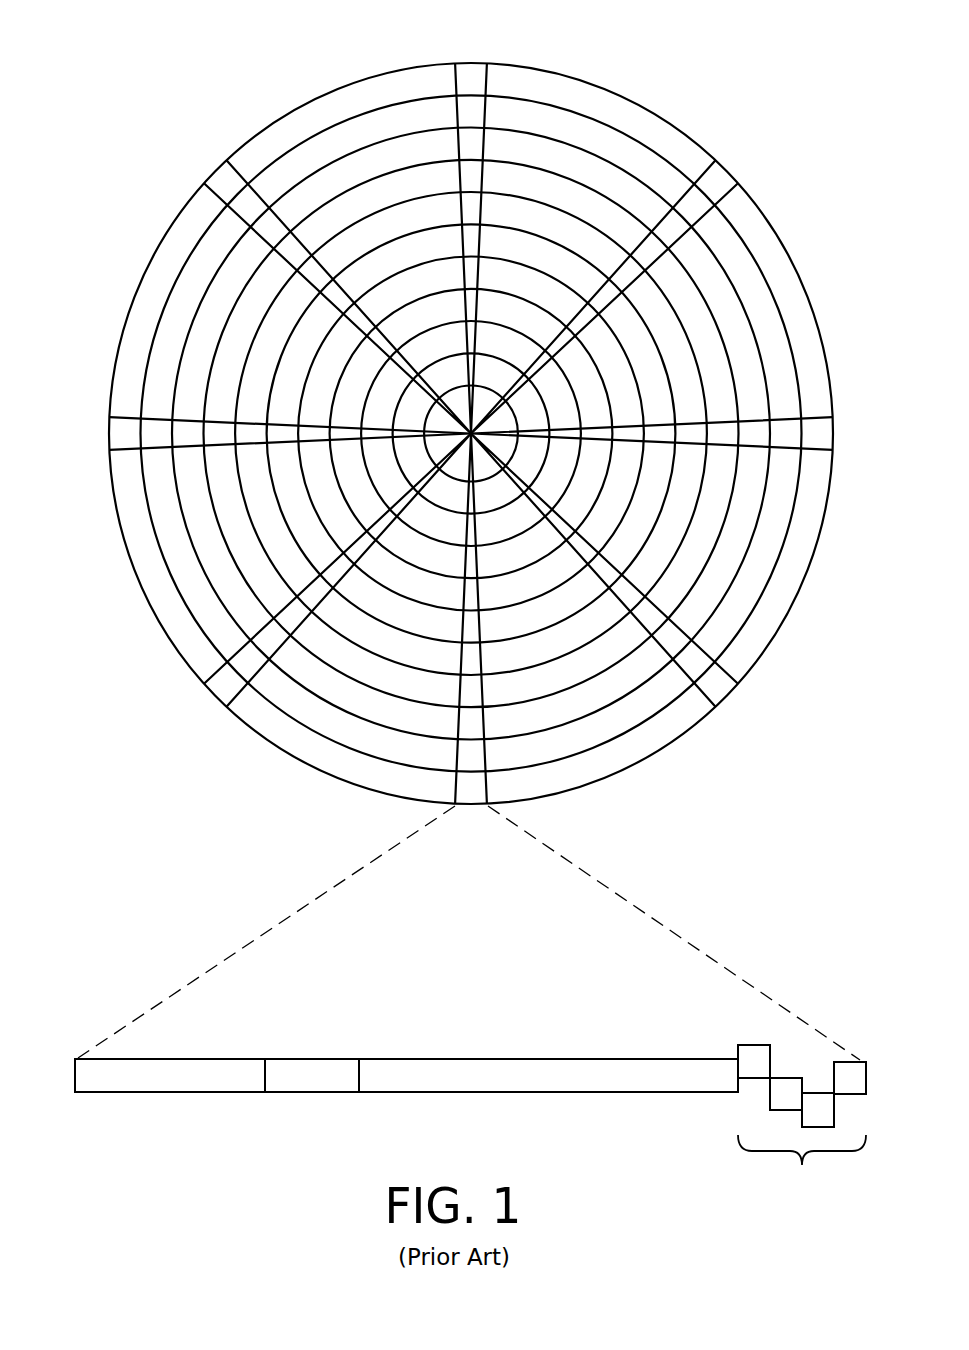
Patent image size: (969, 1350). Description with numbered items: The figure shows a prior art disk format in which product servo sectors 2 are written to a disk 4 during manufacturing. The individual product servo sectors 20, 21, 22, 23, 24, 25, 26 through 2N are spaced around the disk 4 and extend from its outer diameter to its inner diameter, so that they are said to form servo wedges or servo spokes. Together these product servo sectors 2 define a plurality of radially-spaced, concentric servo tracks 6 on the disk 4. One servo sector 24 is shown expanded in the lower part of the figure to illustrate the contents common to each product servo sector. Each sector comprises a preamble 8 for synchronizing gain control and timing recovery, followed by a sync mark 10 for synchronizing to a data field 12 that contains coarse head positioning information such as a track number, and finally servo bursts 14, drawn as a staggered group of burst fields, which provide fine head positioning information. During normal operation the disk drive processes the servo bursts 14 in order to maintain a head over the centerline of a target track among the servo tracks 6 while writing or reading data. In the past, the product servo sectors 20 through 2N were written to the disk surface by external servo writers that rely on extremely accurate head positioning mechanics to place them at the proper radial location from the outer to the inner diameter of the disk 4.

The product servo sectors 2 is at (474, 218).
The product servo sector 20 is at (469, 74).
The product servo sector 21 is at (718, 181).
The product servo sector 22 is at (825, 436).
The product servo sector 23 is at (718, 689).
The product servo sector 24 is at (312, 891).
The product servo sector 25 is at (216, 689).
The product servo sector 26 is at (115, 432).
The product servo sector 2N is at (222, 180).
The disk 4 is at (200, 67).
The servo tracks 6 is at (593, 138).
The preamble 8 is at (149, 1093).
The sync mark 10 is at (309, 1093).
The data field 12 is at (538, 1093).
The servo bursts 14 is at (724, 1023).